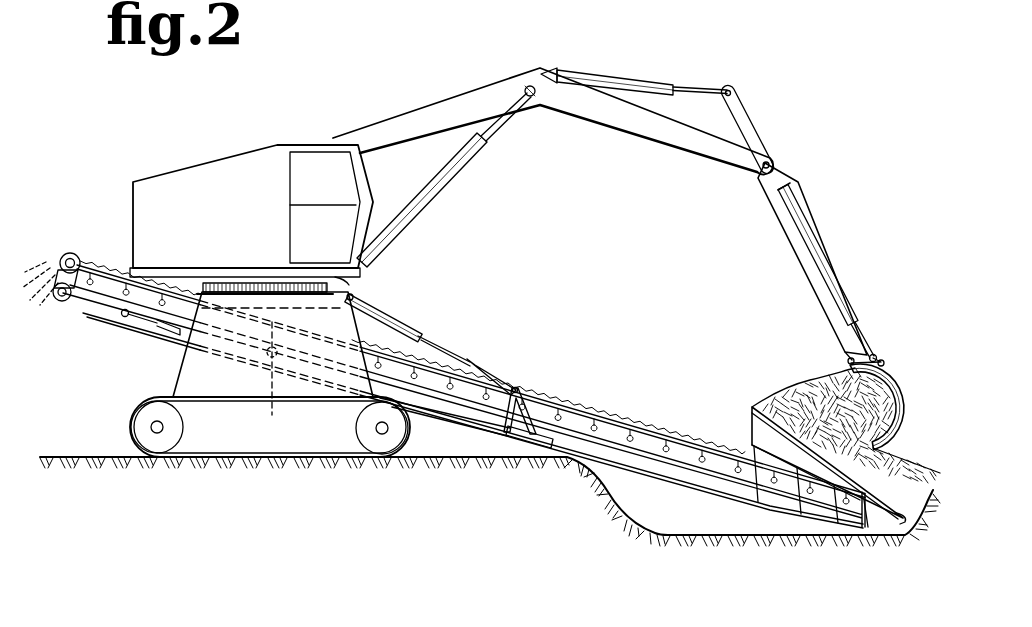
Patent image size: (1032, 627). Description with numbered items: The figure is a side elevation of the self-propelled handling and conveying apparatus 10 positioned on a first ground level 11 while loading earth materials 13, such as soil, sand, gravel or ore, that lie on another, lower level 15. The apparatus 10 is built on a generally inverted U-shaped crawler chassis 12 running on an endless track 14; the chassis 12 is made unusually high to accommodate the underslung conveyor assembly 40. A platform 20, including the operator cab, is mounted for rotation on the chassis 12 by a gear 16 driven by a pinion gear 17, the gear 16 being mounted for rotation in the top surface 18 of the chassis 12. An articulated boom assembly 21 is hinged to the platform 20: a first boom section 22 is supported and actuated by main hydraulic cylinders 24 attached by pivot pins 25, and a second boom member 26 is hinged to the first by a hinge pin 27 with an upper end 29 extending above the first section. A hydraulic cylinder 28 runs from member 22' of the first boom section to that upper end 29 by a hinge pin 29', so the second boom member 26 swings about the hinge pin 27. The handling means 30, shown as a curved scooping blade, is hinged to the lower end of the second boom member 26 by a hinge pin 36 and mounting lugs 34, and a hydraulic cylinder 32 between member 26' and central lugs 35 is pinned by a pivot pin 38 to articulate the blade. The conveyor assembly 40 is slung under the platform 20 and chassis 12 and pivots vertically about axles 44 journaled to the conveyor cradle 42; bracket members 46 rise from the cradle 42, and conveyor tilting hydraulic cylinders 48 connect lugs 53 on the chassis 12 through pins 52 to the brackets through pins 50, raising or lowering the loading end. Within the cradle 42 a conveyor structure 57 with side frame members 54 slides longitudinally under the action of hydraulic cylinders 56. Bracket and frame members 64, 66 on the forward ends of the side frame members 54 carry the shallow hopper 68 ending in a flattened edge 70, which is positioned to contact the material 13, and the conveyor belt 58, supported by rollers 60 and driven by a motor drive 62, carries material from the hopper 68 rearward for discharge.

The handling and conveying apparatus 10 is at (265, 220).
The first ground level 11 is at (435, 460).
The chassis 12 is at (273, 364).
The earth materials 13 is at (43, 272).
The endless track 14 is at (130, 428).
The another level 15 is at (705, 533).
The gear 16 is at (362, 280).
The pinion gear 17 is at (208, 283).
The top surface 18 is at (260, 292).
The platform 20 is at (244, 150).
The articulated boom assembly 21 is at (572, 141).
The first boom section 22 is at (553, 121).
The member of boom member 22 22' is at (565, 49).
The main hydraulic cylinders 24 is at (451, 180).
The pivot pins 25 is at (530, 84).
The second boom member 26 is at (807, 259).
The member of boom member 26 26' is at (812, 164).
The hinge pin 27 is at (775, 165).
The hydraulic cylinder 28 is at (620, 75).
The upper end 29 is at (757, 129).
The hinge pin 29' is at (735, 62).
The handling means 30 is at (905, 405).
The hydraulic cylinder 32 is at (840, 260).
The mounting lugs 34 is at (838, 345).
The lugs 35 is at (880, 352).
The hinge pin 36 is at (853, 367).
The pivot pin 38 is at (883, 369).
The conveyor assembly 40 is at (469, 397).
The conveyor cradle 42 is at (461, 410).
The axles 44 is at (275, 405).
The bracket members 46 is at (530, 395).
The conveyor tilting hydraulic cylinders 48 is at (422, 308).
The pins 50 is at (518, 393).
The pins 52 is at (357, 297).
The lugs 53 is at (350, 310).
The side frame members 54 is at (100, 310).
The hydraulic cylinders 56 is at (180, 337).
The conveyor structure 57 is at (660, 490).
The conveyor belt 58 is at (625, 425).
The rollers 60 is at (695, 455).
The motor drive 62 is at (57, 300).
The bracket and frame member 64 is at (760, 500).
The bracket and frame member 66 is at (789, 446).
The hopper 68 is at (817, 454).
The flattened edge 70 is at (895, 520).